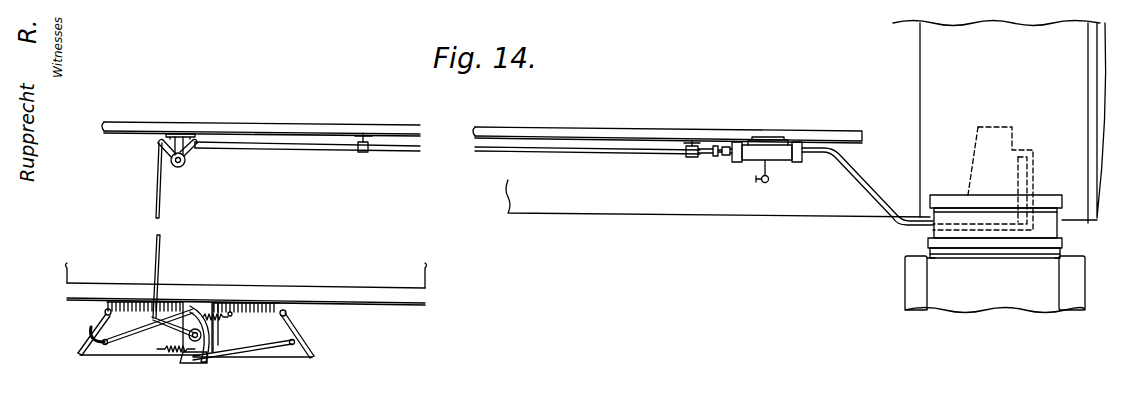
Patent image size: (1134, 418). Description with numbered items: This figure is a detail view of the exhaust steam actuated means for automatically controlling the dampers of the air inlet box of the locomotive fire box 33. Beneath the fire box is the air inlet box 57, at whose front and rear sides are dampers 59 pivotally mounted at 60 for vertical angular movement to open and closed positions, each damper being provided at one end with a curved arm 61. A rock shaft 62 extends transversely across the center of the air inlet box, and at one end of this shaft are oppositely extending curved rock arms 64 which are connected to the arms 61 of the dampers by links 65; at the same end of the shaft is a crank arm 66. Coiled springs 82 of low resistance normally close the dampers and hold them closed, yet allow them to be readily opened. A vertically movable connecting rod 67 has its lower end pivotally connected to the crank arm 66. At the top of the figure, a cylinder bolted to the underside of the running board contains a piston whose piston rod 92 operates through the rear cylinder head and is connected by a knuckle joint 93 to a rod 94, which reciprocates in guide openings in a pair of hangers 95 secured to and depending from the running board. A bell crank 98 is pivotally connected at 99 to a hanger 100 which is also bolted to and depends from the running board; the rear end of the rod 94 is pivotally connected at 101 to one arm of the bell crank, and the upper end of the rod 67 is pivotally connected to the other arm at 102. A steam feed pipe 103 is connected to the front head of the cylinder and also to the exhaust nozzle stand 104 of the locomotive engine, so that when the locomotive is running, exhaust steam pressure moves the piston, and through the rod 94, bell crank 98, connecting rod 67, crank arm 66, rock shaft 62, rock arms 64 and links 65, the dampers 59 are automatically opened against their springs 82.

The fire box 33 is at (390, 301).
The air inlet box 57 is at (129, 355).
The dampers 59 is at (85, 341).
The pivot 60 is at (288, 314).
The curved arm 61 is at (103, 330).
The rock shaft 62 is at (204, 334).
The curved rock arms 64 is at (203, 306).
The links 65 is at (114, 356).
The crank arm 66 is at (162, 332).
The connecting rod 67 is at (163, 207).
The coiled springs 82 is at (224, 317).
The piston rod 92 is at (705, 157).
The knuckle joint 93 is at (772, 147).
The rod 94 is at (543, 127).
The hangers 95 is at (364, 153).
The bell crank 98 is at (196, 153).
The pivot 99 is at (185, 166).
The hanger 100 is at (180, 133).
The pivotal connection 101 is at (198, 142).
The pivotal connection 102 is at (158, 146).
The steam feed pipe 103 is at (866, 184).
The exhaust nozzle stand 104 is at (975, 152).